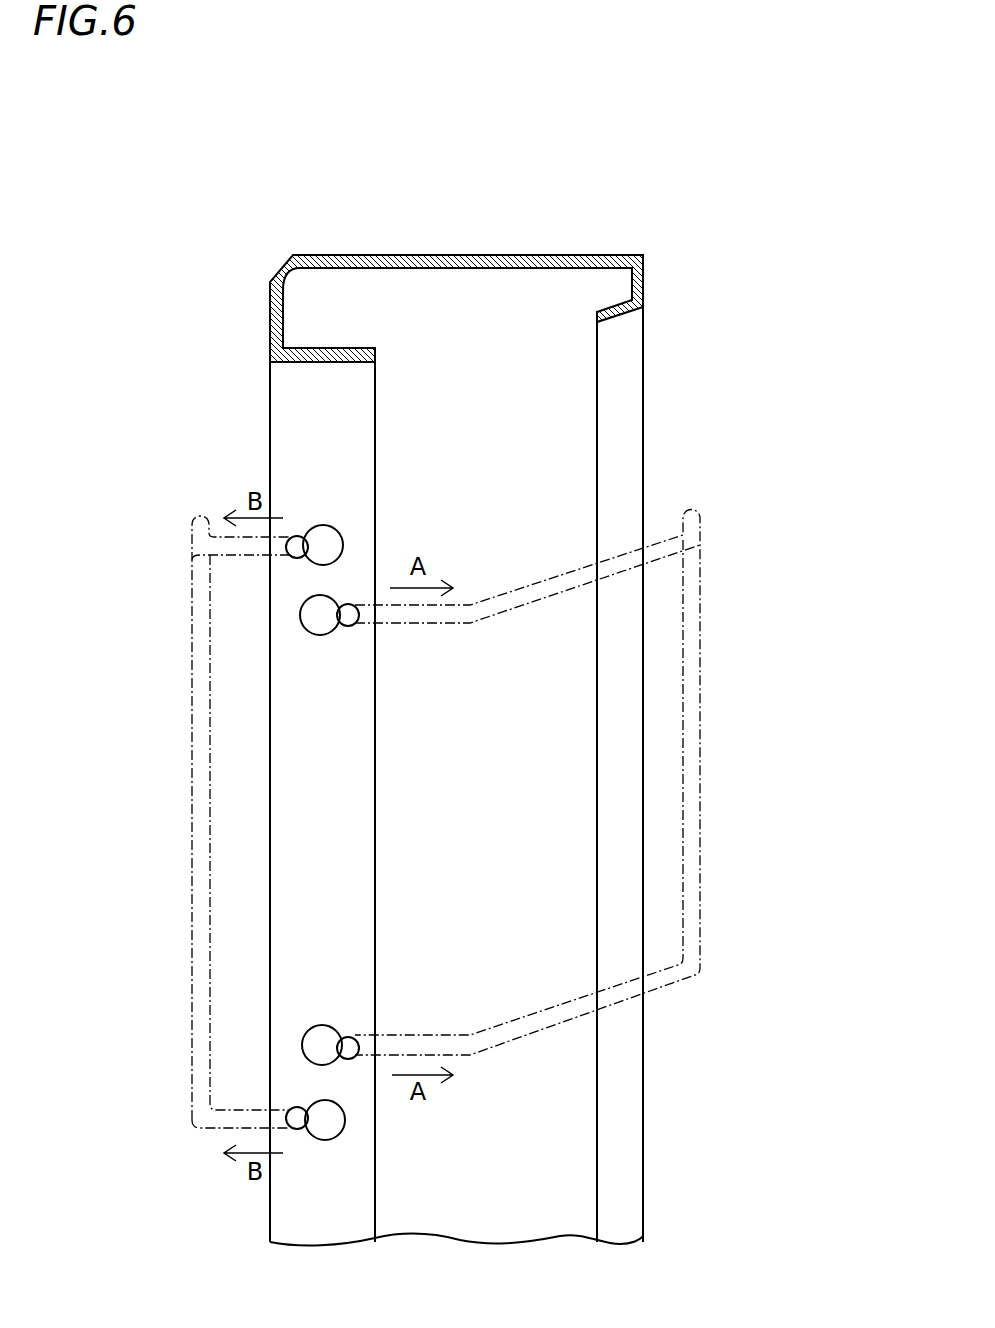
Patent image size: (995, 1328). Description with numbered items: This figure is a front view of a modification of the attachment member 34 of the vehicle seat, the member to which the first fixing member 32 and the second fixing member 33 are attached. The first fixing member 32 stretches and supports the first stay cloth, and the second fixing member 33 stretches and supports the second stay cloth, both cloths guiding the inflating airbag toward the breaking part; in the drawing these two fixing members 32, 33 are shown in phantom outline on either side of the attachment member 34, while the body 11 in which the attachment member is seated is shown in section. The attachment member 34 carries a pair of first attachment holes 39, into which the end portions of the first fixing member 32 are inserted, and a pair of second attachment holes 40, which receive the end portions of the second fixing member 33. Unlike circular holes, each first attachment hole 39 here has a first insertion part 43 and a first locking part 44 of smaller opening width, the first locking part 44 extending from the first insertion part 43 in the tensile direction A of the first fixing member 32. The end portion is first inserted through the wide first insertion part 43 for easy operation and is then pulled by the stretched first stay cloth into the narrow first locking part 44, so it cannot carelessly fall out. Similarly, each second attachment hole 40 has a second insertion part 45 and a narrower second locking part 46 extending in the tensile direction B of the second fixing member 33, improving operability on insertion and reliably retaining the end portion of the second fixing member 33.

The housing body 11 is at (630, 254).
The first fixing member 32 is at (703, 708).
The second fixing member 33 is at (192, 790).
The attachment member 34 is at (332, 350).
The first attachment hole 39 is at (329, 830).
The second attachment hole 40 is at (405, 768).
The first insertion part 43 is at (320, 636).
The first locking part 44 is at (343, 627).
The second insertion part 45 is at (335, 528).
The second locking part 46 is at (298, 537).